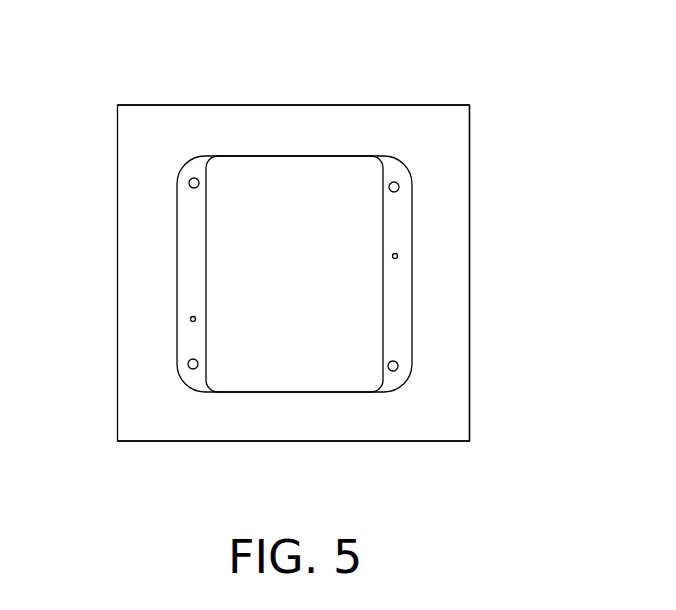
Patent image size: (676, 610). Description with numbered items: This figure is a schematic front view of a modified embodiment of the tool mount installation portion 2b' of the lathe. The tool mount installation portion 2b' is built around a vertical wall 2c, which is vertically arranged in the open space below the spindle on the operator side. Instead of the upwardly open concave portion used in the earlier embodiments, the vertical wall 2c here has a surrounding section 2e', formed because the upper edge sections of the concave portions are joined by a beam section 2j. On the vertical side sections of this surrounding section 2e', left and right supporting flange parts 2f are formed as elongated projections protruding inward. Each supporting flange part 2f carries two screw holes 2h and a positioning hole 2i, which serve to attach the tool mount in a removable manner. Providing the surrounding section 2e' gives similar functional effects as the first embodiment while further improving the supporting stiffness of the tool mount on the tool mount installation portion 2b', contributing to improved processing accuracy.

The tool mount installation portion 2b' is at (340, 229).
The vertical wall 2c is at (447, 313).
The beam section 2j is at (298, 120).
The supporting flange part 2f is at (190, 226).
The surrounding section 2e' is at (382, 274).
The screw hole 2h is at (189, 184).
The positioning hole 2i is at (190, 319).